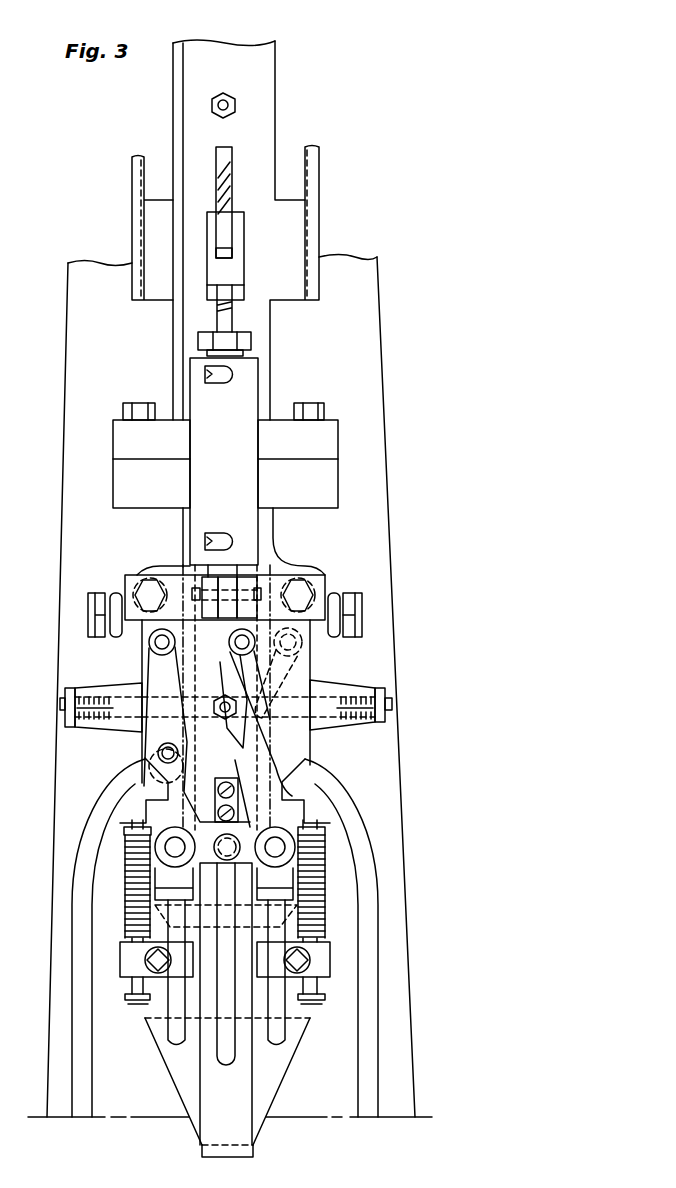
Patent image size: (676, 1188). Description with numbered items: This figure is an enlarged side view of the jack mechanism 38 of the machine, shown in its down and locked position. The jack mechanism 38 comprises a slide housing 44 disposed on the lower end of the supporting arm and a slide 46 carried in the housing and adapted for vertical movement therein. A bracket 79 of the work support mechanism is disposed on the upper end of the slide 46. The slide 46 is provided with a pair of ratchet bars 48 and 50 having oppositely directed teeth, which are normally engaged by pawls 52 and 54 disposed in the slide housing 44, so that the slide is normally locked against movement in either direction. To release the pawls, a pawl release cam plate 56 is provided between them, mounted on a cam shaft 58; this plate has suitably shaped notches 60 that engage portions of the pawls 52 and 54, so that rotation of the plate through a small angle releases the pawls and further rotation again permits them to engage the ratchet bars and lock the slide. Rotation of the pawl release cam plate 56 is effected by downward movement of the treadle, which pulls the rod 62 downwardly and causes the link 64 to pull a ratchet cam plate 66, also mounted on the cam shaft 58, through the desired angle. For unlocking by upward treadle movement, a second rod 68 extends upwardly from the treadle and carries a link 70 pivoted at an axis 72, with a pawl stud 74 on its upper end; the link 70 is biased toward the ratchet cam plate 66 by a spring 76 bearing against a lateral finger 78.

The jack mechanism 38 is at (417, 662).
The slide housing 44 is at (293, 567).
The slide 46 is at (183, 528).
The ratchet bar 48 is at (276, 785).
The ratchet bar 50 is at (198, 660).
The pawl 52 is at (262, 671).
The pawl 54 is at (142, 733).
The pawl release cam plate 56 is at (202, 638).
The cam shaft 58 is at (223, 697).
The notches 60 is at (256, 739).
The rod 62 is at (286, 1032).
The link 64 is at (228, 755).
The ratchet cam plate 66 is at (302, 726).
The second rod 68 is at (168, 1032).
The link 70 is at (133, 781).
The axis 72 is at (155, 847).
The pawl stud 74 is at (128, 639).
The spring 76 is at (132, 888).
The lateral finger 78 is at (127, 810).
The bracket 79 is at (267, 128).